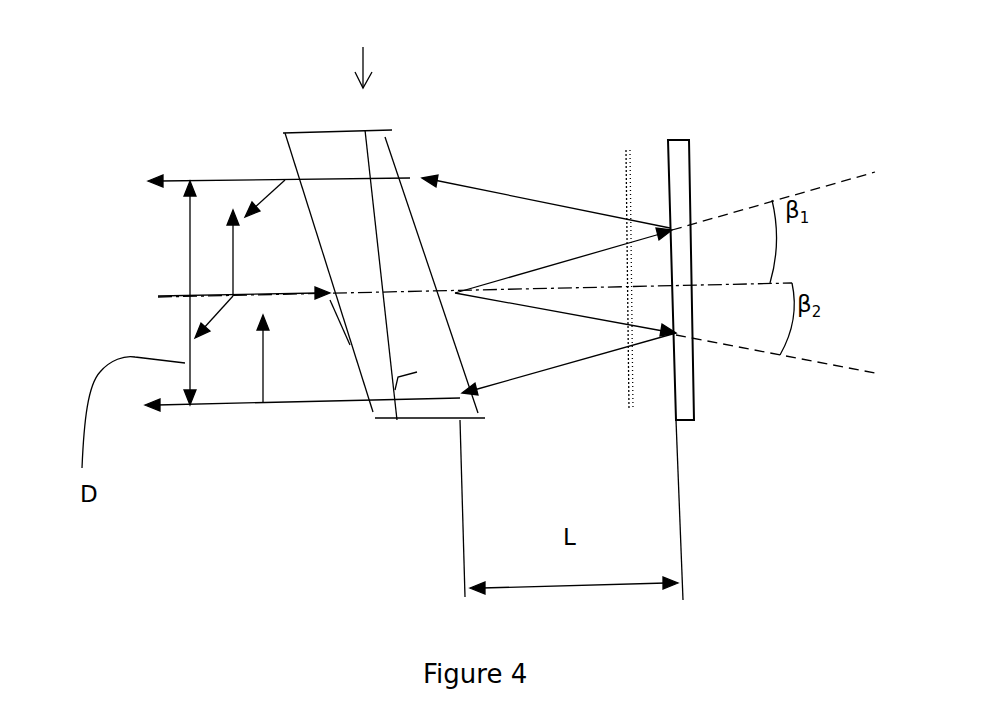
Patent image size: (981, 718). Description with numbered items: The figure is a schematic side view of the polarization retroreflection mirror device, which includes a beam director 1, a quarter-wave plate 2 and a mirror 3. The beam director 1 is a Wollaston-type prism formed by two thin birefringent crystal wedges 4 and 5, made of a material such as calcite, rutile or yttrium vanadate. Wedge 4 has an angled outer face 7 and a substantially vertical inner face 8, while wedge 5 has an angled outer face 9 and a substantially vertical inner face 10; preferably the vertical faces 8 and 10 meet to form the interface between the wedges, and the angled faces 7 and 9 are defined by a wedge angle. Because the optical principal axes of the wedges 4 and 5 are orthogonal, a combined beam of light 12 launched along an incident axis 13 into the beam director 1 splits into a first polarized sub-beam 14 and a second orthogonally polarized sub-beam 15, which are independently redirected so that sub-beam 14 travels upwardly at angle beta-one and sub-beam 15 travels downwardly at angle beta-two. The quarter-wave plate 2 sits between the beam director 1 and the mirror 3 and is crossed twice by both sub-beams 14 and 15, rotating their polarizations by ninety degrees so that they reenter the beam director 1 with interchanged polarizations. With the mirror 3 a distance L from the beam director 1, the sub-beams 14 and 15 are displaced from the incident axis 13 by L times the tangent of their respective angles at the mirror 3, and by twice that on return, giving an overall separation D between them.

The beam director 1 is at (359, 44).
The quarter-wave plate 2 is at (620, 158).
The mirror 3 is at (690, 147).
The birefringent wedge 4 is at (303, 152).
The birefringent wedge 5 is at (438, 420).
The angled outer face 7 is at (342, 346).
The substantially vertical inner face 8 is at (417, 372).
The angled outer face 9 is at (393, 152).
The substantially vertical inner face 10 is at (367, 150).
The combined beam of light 12 is at (225, 280).
The incident axis 13 is at (168, 300).
The first polarized sub-beam 14 is at (538, 190).
The second orthogonally polarized sub-beam 15 is at (542, 373).